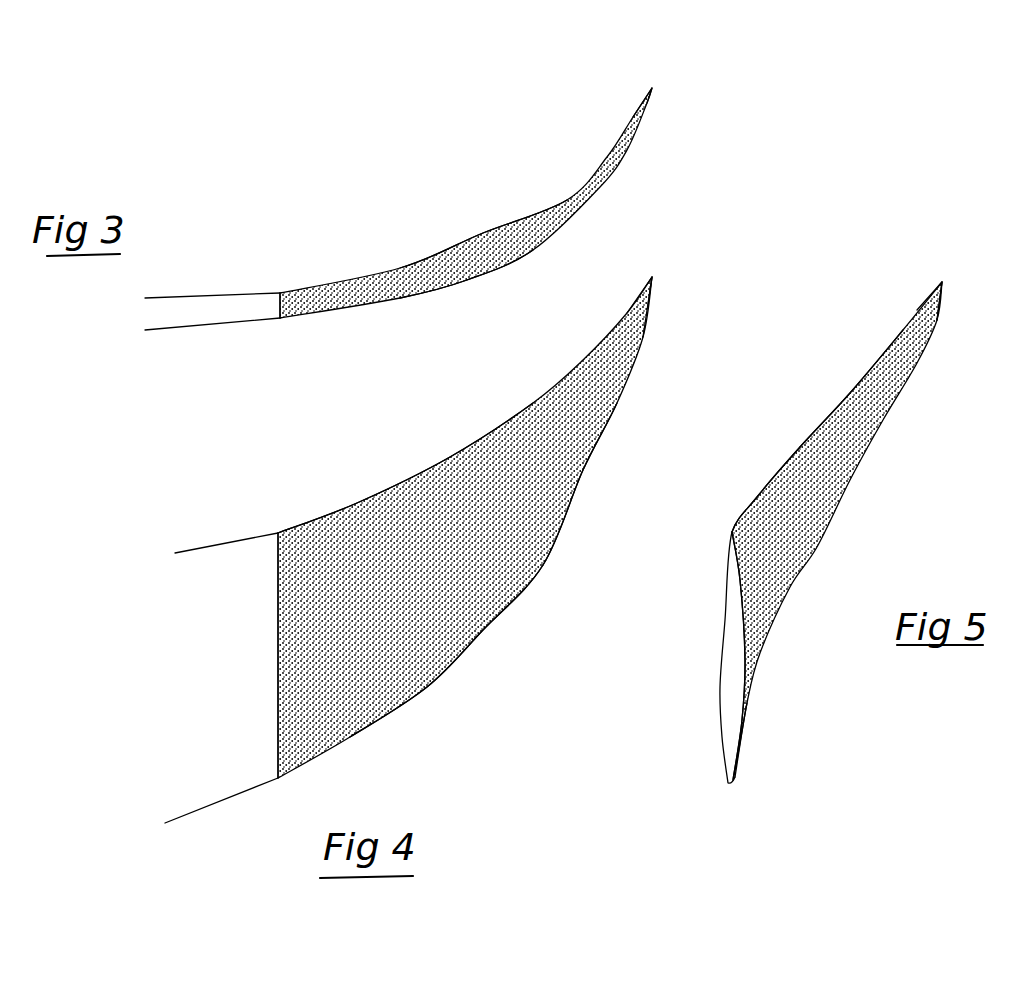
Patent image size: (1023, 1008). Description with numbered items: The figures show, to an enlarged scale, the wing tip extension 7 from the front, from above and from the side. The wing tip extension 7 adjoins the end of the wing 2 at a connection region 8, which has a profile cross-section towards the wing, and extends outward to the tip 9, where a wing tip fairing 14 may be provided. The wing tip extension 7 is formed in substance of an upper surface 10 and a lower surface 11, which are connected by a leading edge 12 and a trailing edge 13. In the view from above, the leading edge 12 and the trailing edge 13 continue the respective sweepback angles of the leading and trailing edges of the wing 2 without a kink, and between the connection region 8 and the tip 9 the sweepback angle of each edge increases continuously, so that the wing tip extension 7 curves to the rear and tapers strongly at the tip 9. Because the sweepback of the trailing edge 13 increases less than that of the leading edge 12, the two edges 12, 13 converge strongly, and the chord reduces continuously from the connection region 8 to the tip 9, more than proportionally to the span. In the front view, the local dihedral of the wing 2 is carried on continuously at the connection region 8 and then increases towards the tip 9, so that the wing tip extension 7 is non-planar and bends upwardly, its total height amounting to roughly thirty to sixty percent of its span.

In FIG. 3, the wing 2 is at (172, 306).
In FIG. 4, the wing 2 is at (202, 603).
In FIG. 3, the wing tip extension 7 is at (607, 155).
In FIG. 4, the wing tip extension 7 is at (465, 527).
In FIG. 5, the wing tip extension 7 is at (899, 404).
In FIG. 3, the connection region 8 is at (278, 306).
In FIG. 4, the connection region 8 is at (278, 645).
In FIG. 5, the connection region 8 is at (725, 660).
In FIG. 3, the tip 9 is at (653, 90).
In FIG. 4, the tip 9 is at (648, 280).
In FIG. 5, the tip 9 is at (933, 281).
In FIG. 3, the upper surface 10 is at (478, 250).
In FIG. 4, the upper surface 10 is at (410, 647).
In FIG. 5, the upper surface 10 is at (823, 420).
In FIG. 3, the lower surface 11 is at (462, 282).
In FIG. 4, the leading edge 12 is at (543, 567).
In FIG. 5, the leading edge 12 is at (728, 785).
In FIG. 4, the trailing edge 13 is at (358, 505).
In FIG. 5, the trailing edge 13 is at (783, 447).
In FIG. 4, the wing tip fairing 14 is at (656, 287).
In FIG. 5, the wing tip fairing 14 is at (945, 290).